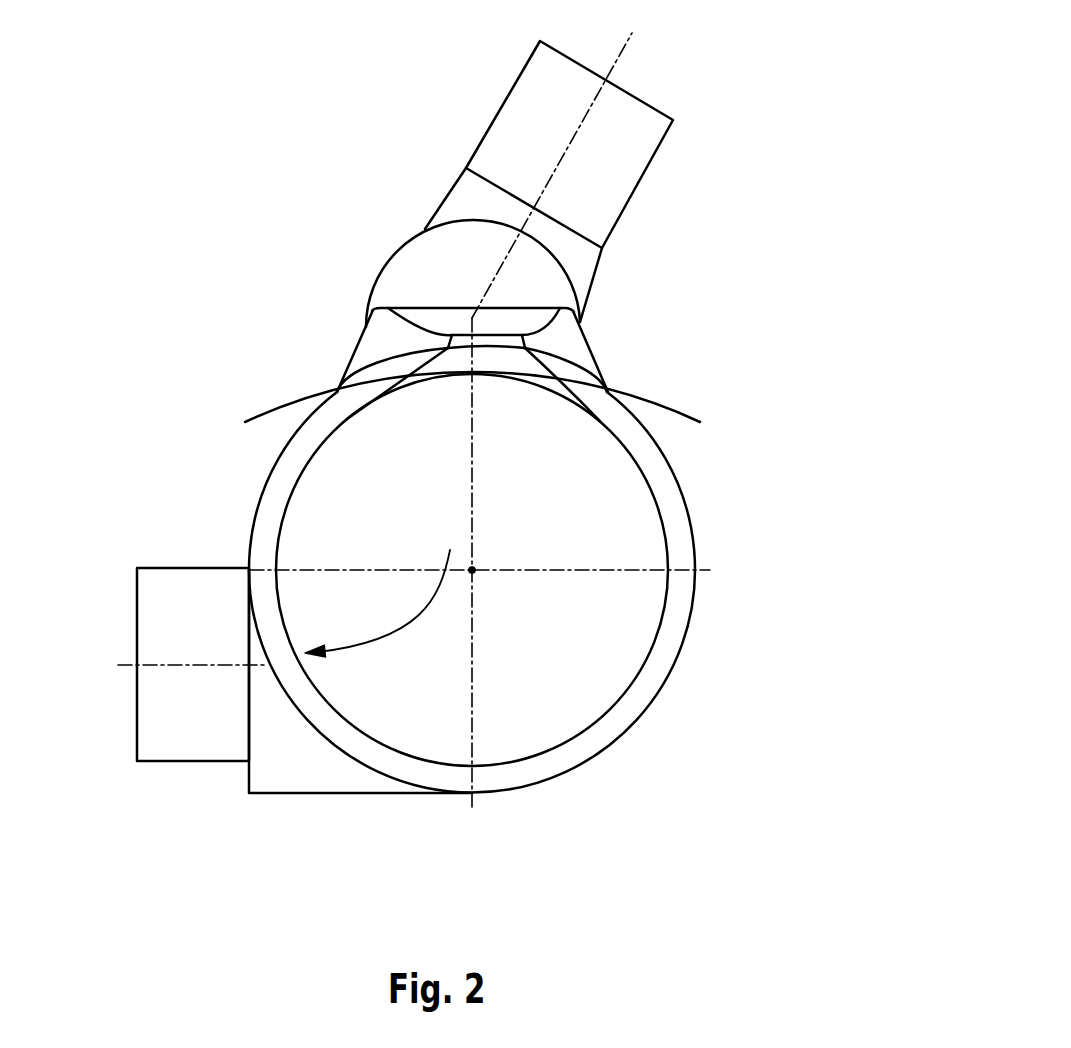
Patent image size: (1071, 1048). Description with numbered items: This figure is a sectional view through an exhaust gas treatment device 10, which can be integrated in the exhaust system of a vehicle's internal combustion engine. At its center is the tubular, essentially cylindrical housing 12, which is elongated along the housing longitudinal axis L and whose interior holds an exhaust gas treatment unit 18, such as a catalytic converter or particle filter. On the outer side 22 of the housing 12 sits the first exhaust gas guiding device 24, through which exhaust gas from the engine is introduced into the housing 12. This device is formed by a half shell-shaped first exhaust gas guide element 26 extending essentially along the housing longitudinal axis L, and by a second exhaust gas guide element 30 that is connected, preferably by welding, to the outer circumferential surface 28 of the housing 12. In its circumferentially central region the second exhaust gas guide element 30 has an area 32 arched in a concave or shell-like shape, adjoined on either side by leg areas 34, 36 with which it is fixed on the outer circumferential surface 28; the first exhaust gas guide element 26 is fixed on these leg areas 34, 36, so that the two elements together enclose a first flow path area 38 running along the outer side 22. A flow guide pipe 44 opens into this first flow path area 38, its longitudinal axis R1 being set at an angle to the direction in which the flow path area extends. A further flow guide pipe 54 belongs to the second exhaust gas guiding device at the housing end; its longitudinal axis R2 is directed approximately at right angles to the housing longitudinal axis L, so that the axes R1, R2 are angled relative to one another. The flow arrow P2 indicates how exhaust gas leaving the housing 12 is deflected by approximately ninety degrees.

The exhaust gas treatment device 10 is at (262, 95).
The housing 12 is at (678, 656).
The exhaust gas treatment unit 18 is at (667, 542).
The outer side 22 is at (275, 374).
The first exhaust gas guiding device 24 is at (300, 236).
The first exhaust gas guide element 26 is at (560, 257).
The outer circumferential surface 28 is at (578, 768).
The second exhaust gas guide element 30 is at (343, 395).
The arched area 32 is at (605, 393).
The leg area 34 is at (357, 356).
The leg area 36 is at (587, 345).
The first flow path area 38 is at (440, 263).
The flow guide pipe 44 is at (645, 173).
The flow guide pipe 54 is at (207, 762).
The housing longitudinal axis L is at (476, 575).
The longitudinal axis of flow guide pipe R1 is at (630, 47).
The longitudinal axis of flow guide pipe R2 is at (127, 665).
The flow arrow P2 is at (378, 637).